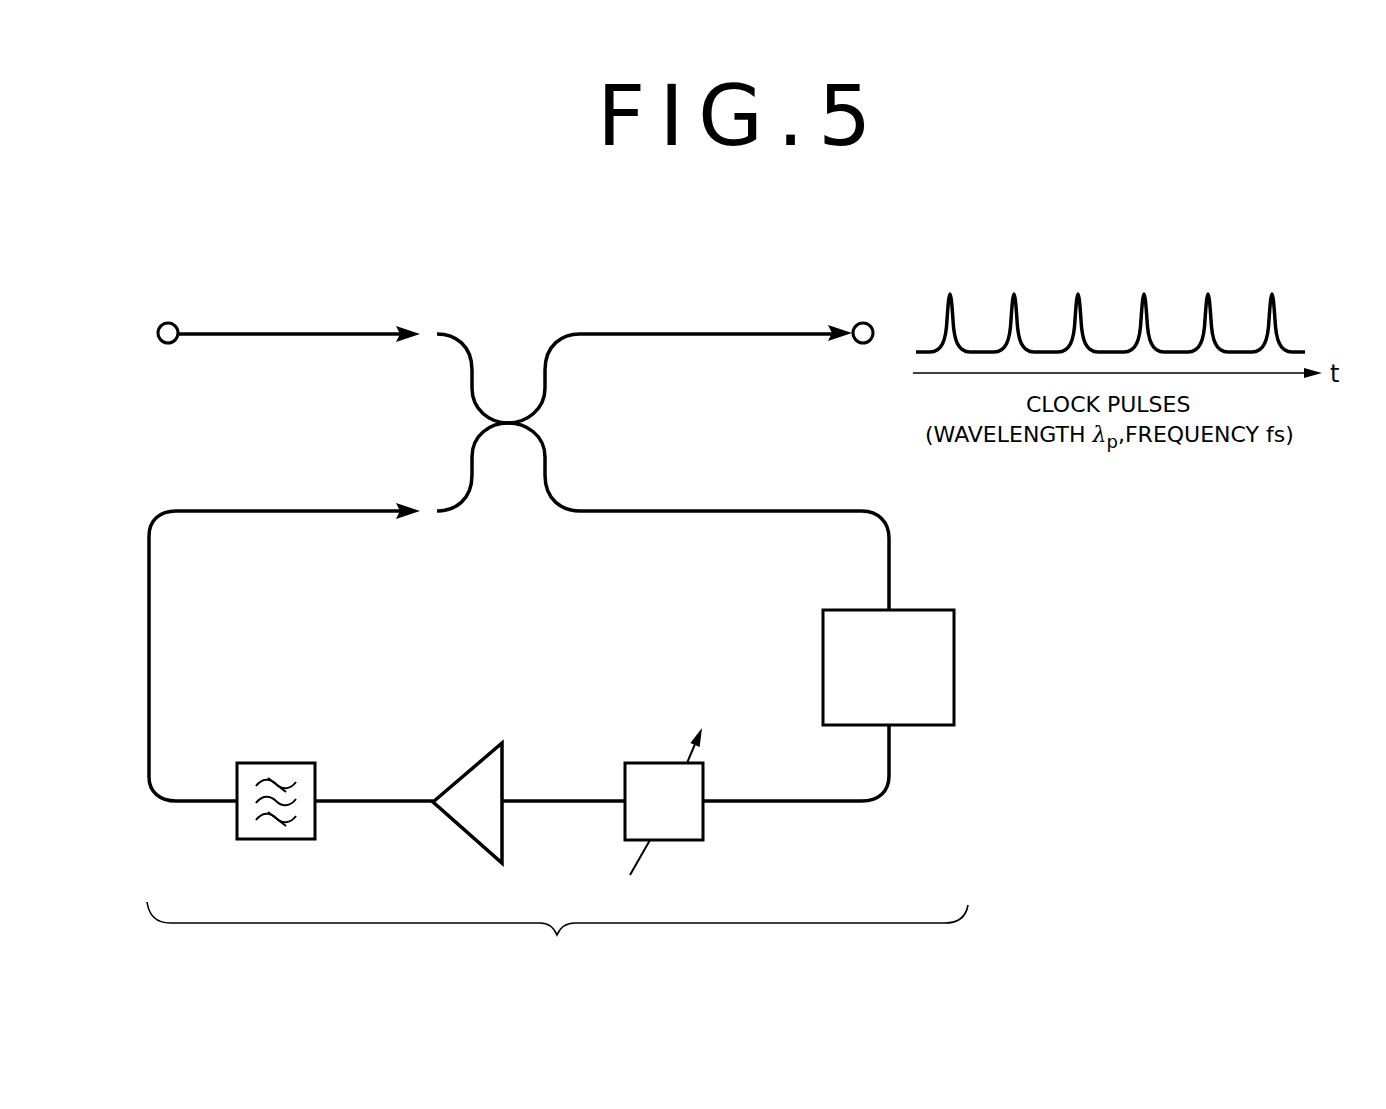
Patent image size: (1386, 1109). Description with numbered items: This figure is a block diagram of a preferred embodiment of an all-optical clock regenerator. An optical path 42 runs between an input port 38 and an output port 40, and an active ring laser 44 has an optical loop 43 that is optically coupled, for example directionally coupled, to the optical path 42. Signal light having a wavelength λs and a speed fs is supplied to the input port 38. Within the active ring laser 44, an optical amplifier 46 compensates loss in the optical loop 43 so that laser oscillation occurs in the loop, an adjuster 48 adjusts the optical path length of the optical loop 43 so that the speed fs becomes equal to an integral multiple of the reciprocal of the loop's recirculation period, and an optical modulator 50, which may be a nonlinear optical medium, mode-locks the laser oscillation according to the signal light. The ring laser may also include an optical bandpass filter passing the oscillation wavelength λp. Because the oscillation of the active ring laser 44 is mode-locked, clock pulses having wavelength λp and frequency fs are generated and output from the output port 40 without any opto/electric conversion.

The input port 38 is at (170, 322).
The output port 40 is at (863, 322).
The optical path 42 is at (636, 334).
The optical loop 43 is at (277, 762).
The active ring laser 44 is at (557, 737).
The optical amplifier 46 is at (467, 770).
The adjuster 48 is at (656, 762).
The optical modulator 50 is at (955, 673).